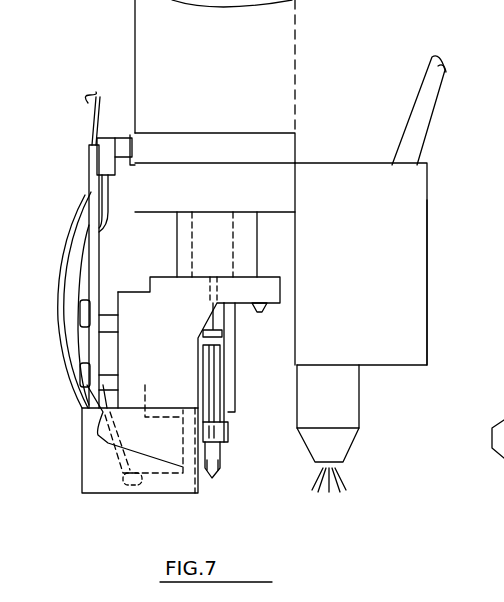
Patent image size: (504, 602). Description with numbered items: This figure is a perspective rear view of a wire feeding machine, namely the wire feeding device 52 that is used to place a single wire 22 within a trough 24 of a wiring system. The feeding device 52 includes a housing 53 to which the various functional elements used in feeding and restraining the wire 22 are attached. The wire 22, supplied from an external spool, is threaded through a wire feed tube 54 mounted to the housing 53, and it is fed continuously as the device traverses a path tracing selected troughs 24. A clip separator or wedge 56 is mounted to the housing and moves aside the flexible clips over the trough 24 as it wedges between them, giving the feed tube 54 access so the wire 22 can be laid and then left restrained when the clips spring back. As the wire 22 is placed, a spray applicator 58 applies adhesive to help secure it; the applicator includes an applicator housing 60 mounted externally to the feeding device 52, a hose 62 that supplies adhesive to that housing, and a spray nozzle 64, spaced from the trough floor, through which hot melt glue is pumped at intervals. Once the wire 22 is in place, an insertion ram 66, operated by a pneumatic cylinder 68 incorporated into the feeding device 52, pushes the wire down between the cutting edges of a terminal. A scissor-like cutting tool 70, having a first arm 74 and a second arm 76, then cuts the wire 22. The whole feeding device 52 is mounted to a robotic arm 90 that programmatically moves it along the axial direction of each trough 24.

The wire 22 is at (85, 99).
The trough 24 is at (498, 457).
The wire feeding device 52 is at (307, 127).
The housing 53 is at (302, 153).
The wire feed tube 54 is at (89, 160).
The clip separator or wedge 56 is at (100, 484).
The spray applicator 58 is at (441, 167).
The applicator housing 60 is at (419, 262).
The hose 62 is at (430, 95).
The spray nozzle 64 is at (349, 443).
The insertion ram 66 is at (222, 443).
The pneumatic cylinder 68 is at (185, 239).
The cutting tool 70 is at (248, 419).
The first arm 74 is at (215, 473).
The second arm 76 is at (212, 470).
The robotic arm 90 is at (302, 43).